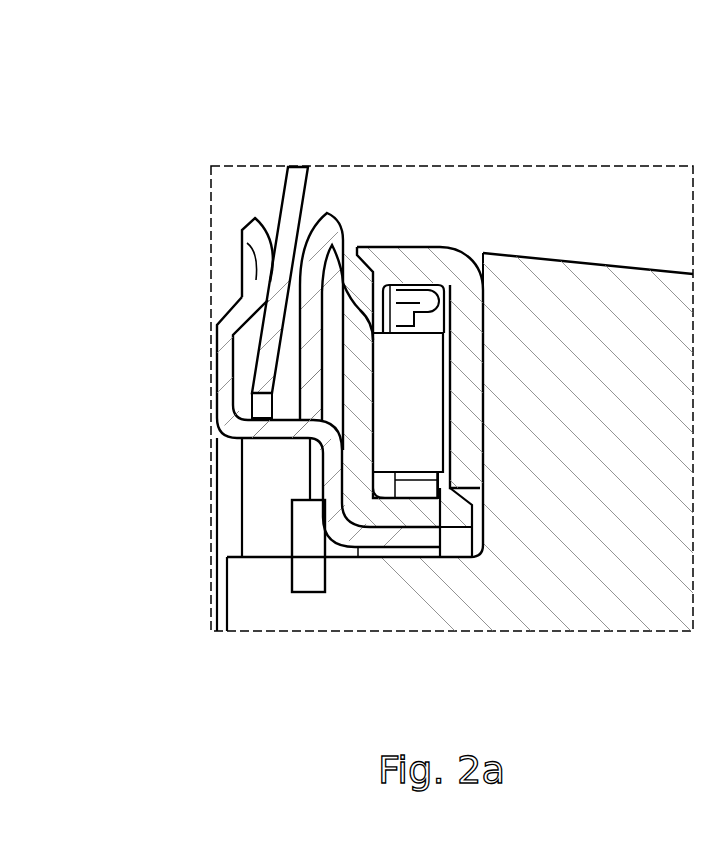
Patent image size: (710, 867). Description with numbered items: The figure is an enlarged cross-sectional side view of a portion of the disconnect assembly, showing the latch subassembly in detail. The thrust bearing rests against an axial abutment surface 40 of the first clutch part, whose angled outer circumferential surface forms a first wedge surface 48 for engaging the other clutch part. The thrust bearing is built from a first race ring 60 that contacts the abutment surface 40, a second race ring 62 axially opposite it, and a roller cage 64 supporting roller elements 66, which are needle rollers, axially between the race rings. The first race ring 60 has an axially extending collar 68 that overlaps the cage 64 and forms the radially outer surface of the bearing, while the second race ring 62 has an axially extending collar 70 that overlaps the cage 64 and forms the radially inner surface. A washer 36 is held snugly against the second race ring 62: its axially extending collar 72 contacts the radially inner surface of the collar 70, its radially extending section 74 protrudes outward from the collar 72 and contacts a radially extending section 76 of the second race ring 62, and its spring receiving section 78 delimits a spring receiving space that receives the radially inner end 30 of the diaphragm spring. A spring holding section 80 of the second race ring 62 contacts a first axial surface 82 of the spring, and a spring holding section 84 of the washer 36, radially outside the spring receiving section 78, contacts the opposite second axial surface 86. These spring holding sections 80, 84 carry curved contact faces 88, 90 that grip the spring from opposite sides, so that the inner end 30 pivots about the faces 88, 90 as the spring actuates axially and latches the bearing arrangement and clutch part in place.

The radially inner end 30 is at (270, 318).
The washer 36 is at (205, 348).
The axial abutment surface 40 is at (483, 410).
The first wedge surface 48 is at (617, 265).
The first race ring 60 is at (473, 287).
The second race ring 62 is at (376, 270).
The roller cage 64 is at (418, 288).
The roller elements 66 is at (418, 355).
The axially extending collar 68 is at (398, 274).
The axially extending collar 70 is at (411, 518).
The axially extending collar 72 is at (366, 538).
The radially extending section 74 is at (333, 467).
The radially extending section 76 is at (363, 437).
The spring receiving section 78 is at (233, 387).
The spring holding section 80 is at (318, 243).
The first axial surface 82 is at (298, 197).
The spring holding section 84 is at (253, 281).
The second axial surface 86 is at (284, 192).
The contact face 88 is at (313, 228).
The contact face 90 is at (262, 272).